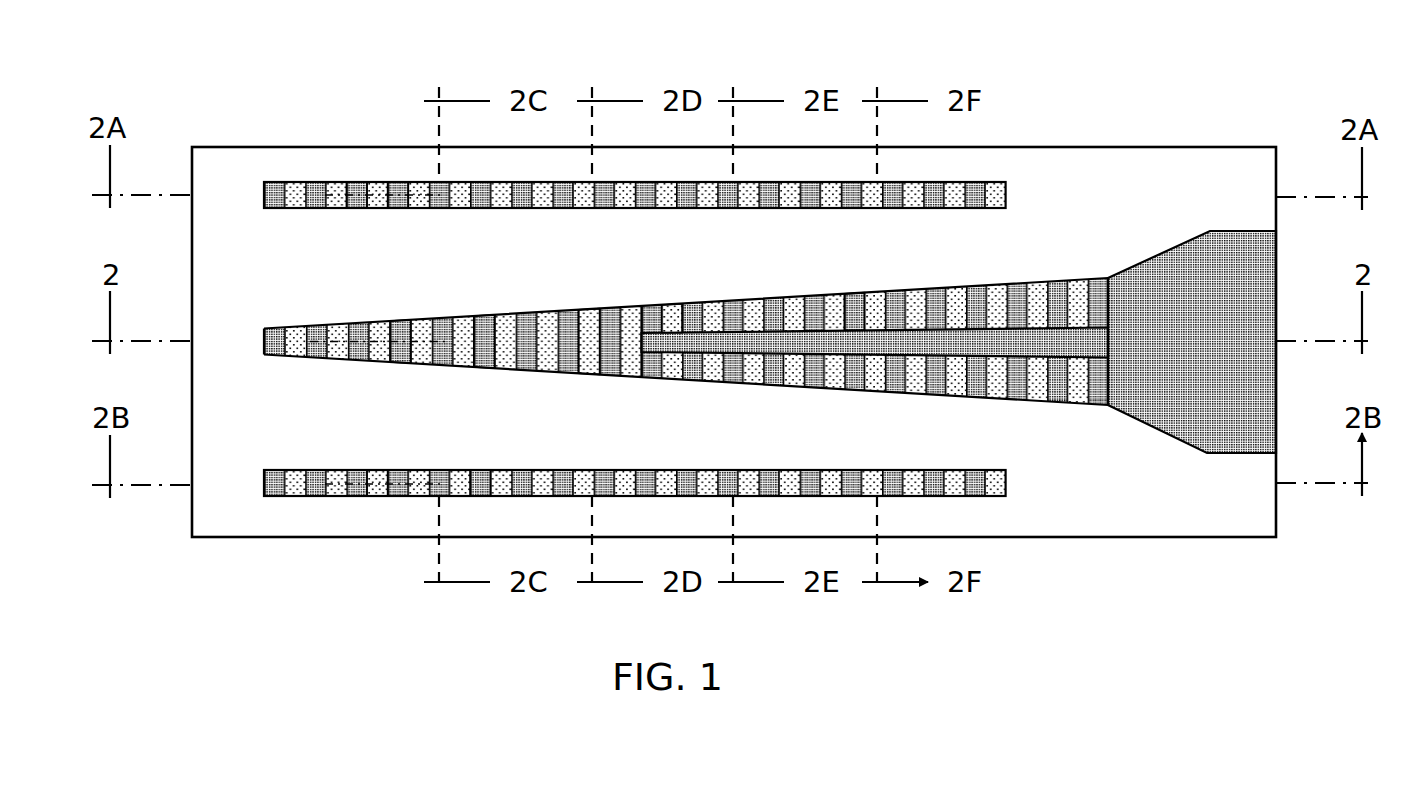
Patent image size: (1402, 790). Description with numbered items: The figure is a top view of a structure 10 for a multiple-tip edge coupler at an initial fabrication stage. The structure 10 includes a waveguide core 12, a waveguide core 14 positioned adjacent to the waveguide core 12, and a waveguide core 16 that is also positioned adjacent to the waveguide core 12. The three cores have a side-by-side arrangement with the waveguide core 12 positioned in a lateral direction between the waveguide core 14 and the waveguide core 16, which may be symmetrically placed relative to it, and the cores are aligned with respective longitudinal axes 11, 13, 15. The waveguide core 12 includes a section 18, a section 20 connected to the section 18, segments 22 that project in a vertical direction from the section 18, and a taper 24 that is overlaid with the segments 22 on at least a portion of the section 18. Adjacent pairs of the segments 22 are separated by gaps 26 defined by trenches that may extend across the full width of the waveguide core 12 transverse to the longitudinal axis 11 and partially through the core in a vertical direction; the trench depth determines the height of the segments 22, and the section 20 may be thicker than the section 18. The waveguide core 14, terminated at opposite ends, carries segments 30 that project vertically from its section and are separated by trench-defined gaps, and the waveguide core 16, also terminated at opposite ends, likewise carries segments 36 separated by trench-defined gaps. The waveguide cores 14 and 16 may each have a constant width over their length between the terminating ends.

The structure 10 is at (226, 118).
The longitudinal axis 11 is at (400, 340).
The waveguide core 12 is at (770, 309).
The longitudinal axis 13 is at (352, 190).
The waveguide core 14 is at (672, 149).
The longitudinal axis 15 is at (383, 483).
The waveguide core 16 is at (672, 448).
The section 18 is at (590, 333).
The section 20 is at (1210, 270).
The segments 22 is at (487, 340).
The taper 24 is at (780, 345).
The gaps 26 is at (660, 294).
The segments 30 is at (400, 190).
The segments 36 is at (482, 483).